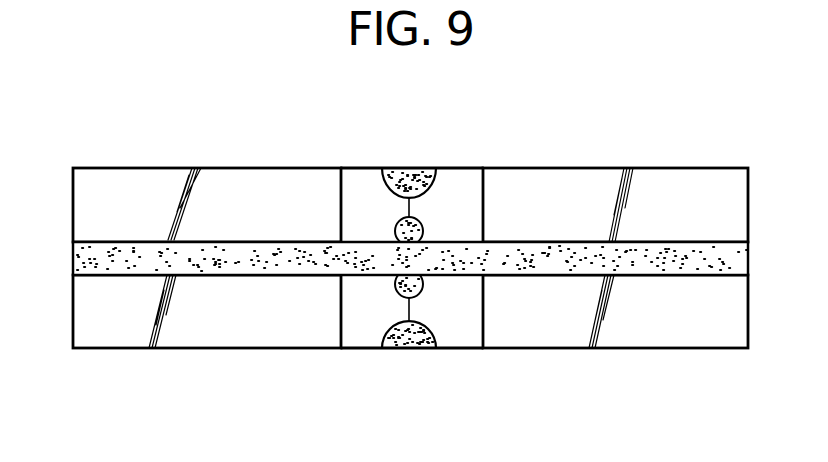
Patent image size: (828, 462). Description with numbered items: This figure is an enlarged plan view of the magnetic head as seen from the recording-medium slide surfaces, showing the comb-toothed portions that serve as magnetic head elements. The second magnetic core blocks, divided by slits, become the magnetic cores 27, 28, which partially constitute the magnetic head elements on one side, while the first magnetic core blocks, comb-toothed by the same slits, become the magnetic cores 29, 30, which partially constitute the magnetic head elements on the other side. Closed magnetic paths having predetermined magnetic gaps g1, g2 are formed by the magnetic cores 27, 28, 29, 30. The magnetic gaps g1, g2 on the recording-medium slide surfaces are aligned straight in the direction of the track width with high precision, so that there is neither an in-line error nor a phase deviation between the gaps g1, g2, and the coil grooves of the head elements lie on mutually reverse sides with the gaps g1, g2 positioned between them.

The magnetic core 27 is at (577, 313).
The magnetic core 28 is at (228, 168).
The magnetic core 29 is at (212, 348).
The magnetic core 30 is at (593, 190).
The magnetic gap g1 is at (412, 305).
The magnetic gap g2 is at (412, 208).